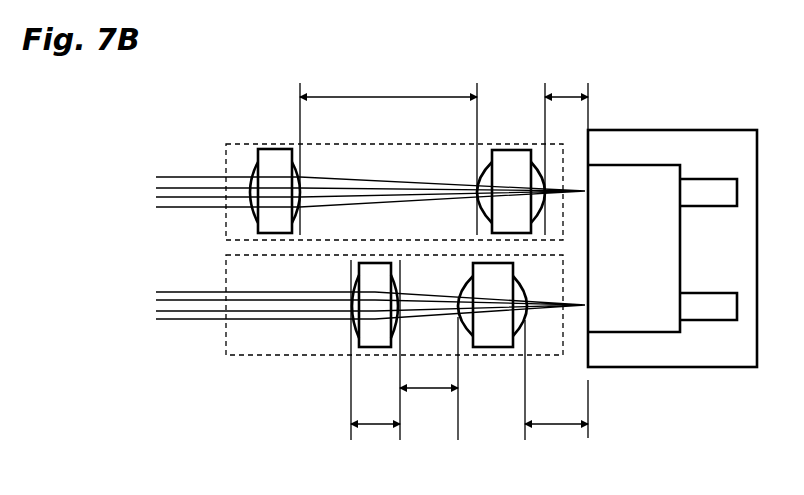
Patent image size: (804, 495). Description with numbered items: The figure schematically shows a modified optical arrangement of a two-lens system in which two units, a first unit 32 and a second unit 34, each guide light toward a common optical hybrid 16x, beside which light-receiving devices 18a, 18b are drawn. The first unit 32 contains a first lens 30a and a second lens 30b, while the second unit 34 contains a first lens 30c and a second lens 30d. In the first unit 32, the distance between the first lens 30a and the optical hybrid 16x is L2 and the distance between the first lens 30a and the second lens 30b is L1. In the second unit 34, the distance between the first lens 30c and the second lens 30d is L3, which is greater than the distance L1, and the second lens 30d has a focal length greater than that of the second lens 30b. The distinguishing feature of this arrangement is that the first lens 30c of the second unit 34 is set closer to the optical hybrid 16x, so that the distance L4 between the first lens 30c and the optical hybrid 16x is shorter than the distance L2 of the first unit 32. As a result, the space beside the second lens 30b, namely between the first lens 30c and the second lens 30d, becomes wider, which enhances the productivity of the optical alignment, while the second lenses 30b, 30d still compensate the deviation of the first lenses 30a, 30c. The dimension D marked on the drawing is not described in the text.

The first lens 30a is at (497, 335).
The second lens 30b is at (362, 343).
The first lens 30c is at (517, 167).
The second lens 30d is at (278, 163).
The first unit 32 is at (226, 355).
The second unit 34 is at (225, 157).
The optical hybrid 16x is at (645, 188).
The light-receiving device 18a is at (706, 192).
The light-receiving device 18b is at (719, 307).
The distance between first and second lenses of the first unit L1 is at (429, 378).
The distance between first lens and optical hybrid in the first unit L2 is at (556, 392).
The distance between first and second lenses of the second unit L3 is at (388, 150).
The distance between first lens and optical hybrid in the second unit L4 is at (566, 145).
The lens thickness D is at (375, 361).